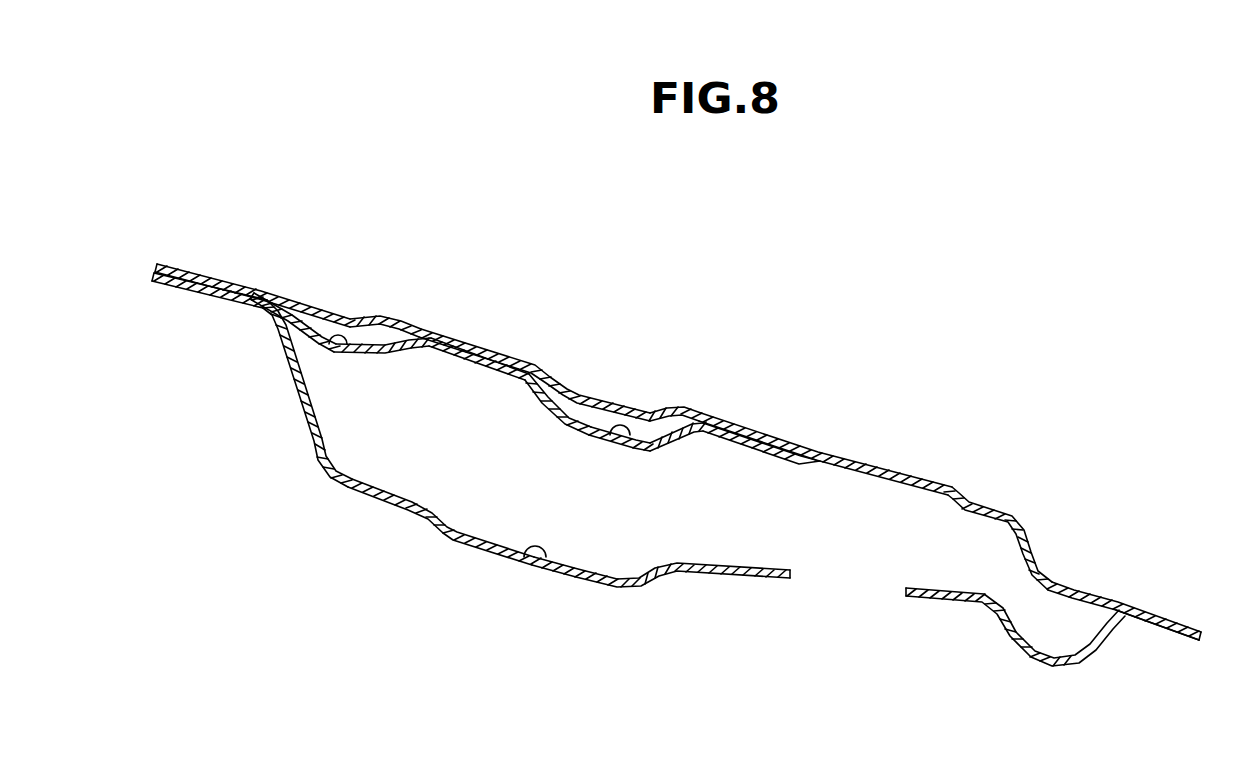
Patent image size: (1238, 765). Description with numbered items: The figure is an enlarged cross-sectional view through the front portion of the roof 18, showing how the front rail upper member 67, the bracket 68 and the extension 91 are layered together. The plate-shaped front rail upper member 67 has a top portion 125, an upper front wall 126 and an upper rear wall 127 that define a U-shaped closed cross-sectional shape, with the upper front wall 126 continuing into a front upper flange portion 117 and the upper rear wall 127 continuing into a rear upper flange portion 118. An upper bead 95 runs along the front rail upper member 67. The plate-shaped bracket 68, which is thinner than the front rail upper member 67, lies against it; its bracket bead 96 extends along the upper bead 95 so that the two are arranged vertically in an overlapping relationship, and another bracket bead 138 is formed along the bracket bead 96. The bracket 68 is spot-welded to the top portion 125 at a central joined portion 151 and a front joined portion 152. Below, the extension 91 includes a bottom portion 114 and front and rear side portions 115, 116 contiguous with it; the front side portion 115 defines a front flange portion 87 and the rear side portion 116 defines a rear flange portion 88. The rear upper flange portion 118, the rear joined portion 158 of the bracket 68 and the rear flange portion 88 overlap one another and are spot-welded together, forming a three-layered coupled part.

The roof 18 is at (268, 160).
The rear upper flange portion 118 is at (212, 268).
The rear joined portion 158 is at (254, 296).
The upper rear wall 127 is at (382, 320).
The front rail upper member 67 is at (470, 331).
The upper bead 95 is at (613, 402).
The top portion 125 is at (843, 455).
The upper front wall 126 is at (1028, 548).
The front upper flange portion 117 is at (1163, 618).
The front flange portion 87 is at (1179, 641).
The rear flange portion 88 is at (162, 286).
The rear side portion 116 is at (300, 402).
The extension 91 is at (463, 537).
The bottom portion 114 is at (543, 567).
The bracket bead 138 is at (338, 346).
The central joined portion 151 is at (465, 358).
The bracket 68 is at (487, 364).
The bracket bead 96 is at (620, 436).
The front joined portion 152 is at (783, 457).
The front side portion 115 is at (1105, 634).